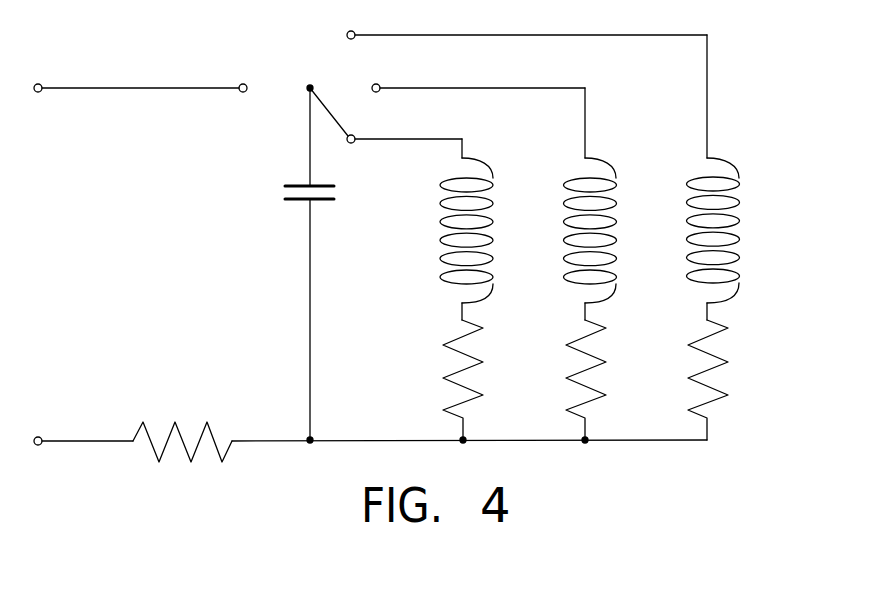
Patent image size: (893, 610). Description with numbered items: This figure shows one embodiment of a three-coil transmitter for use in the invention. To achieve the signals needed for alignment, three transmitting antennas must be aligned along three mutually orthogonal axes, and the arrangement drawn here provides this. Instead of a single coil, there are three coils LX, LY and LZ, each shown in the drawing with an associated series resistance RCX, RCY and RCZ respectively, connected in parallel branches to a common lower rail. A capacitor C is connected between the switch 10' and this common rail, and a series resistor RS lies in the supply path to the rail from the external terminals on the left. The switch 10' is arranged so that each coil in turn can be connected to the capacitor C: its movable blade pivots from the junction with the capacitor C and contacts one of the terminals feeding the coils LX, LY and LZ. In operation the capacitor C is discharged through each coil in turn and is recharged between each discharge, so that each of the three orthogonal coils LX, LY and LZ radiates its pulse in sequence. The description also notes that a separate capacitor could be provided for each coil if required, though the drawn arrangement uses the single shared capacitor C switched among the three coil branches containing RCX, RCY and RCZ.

The switch 10' is at (369, 98).
The capacitor C is at (296, 265).
The coil Lx LX is at (447, 229).
The coil Ly LY is at (570, 204).
The coil Lz LZ is at (693, 177).
The coil resistance X RCX is at (491, 380).
The coil resistance Y RCY is at (614, 380).
The coil resistance Z RCZ is at (737, 380).
The series resistor RS is at (182, 419).